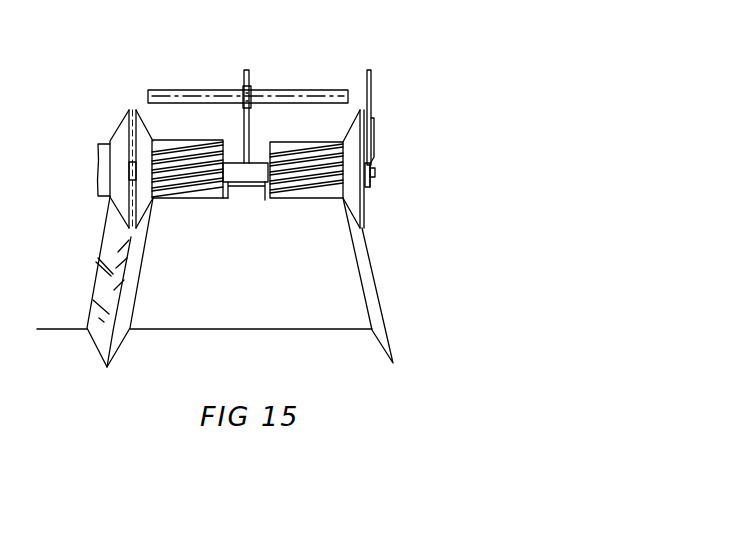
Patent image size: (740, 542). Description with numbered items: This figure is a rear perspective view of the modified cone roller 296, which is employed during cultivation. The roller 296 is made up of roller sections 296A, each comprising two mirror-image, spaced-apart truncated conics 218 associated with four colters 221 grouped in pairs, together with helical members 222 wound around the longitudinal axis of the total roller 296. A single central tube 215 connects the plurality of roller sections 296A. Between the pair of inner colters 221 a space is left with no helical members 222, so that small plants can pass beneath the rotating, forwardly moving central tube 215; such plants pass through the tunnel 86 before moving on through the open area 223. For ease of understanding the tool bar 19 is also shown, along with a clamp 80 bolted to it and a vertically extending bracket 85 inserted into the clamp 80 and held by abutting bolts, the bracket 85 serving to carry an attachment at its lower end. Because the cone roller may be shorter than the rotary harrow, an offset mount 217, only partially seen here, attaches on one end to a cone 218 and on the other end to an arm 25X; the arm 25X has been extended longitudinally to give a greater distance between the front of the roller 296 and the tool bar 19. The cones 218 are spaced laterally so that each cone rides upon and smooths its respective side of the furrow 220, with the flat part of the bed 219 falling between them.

The tool bar 19 is at (334, 90).
The clamp 80 is at (252, 89).
The vertically extending bracket 85 is at (243, 89).
The central tube 215 is at (258, 172).
The tunnel 86 is at (232, 186).
The colters 221 is at (228, 152).
The open area 223 is at (257, 152).
The helical members 222 is at (155, 139).
The roller section 296A is at (93, 180).
The modified roller 296 is at (212, 204).
The truncated conic 218 is at (363, 203).
The arm 25X is at (373, 95).
The offset mount 217 is at (376, 153).
The flat part of the bed 219 is at (188, 292).
The furrow 220 is at (373, 305).